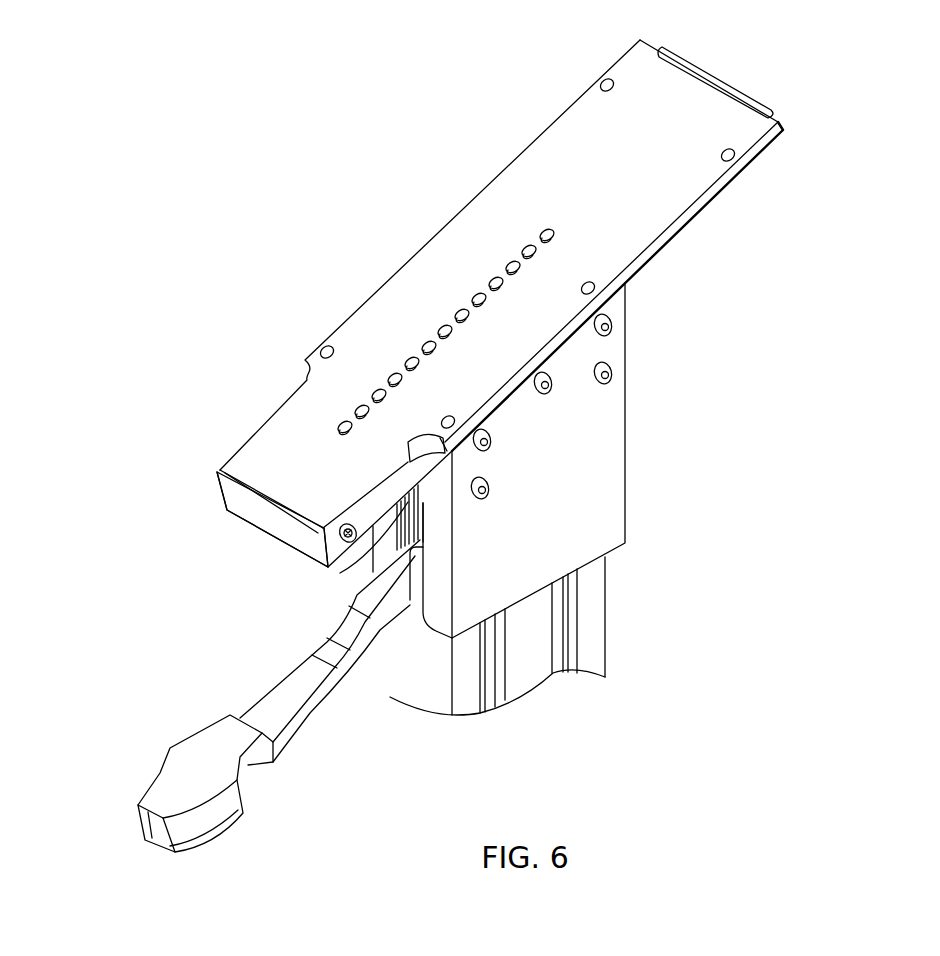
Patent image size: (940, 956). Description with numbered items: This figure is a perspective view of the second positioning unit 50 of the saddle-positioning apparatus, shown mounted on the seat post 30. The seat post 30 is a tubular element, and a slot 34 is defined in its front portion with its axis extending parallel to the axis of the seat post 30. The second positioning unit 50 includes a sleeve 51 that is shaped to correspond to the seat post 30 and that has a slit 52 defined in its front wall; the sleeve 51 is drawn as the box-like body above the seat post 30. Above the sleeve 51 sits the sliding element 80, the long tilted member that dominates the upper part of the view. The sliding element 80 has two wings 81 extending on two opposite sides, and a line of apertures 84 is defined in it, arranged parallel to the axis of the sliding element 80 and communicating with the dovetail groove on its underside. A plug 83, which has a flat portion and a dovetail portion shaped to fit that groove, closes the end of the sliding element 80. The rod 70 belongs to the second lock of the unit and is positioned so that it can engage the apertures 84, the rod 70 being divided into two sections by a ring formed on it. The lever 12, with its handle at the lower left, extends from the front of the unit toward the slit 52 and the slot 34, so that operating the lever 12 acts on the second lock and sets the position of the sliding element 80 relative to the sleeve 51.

The lever 12 is at (220, 760).
The seat post 30 is at (590, 633).
The slot 34 is at (340, 573).
The second positioning unit 50 is at (802, 300).
The sleeve 51 is at (608, 452).
The slit 52 is at (410, 610).
The rod 70 is at (442, 327).
The sliding element 80 is at (270, 455).
The wings 81 is at (343, 333).
The plug 83 is at (238, 498).
The apertures 84 is at (543, 230).